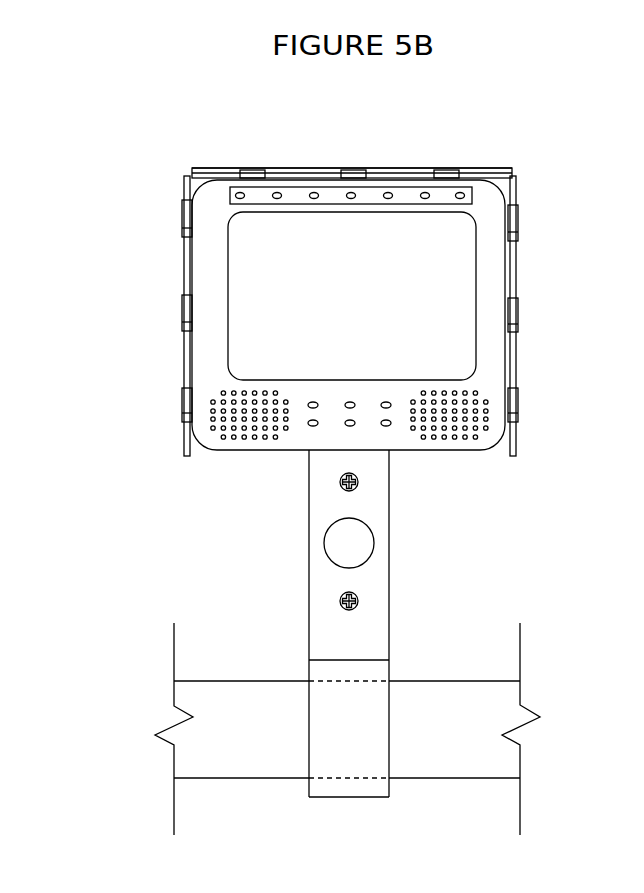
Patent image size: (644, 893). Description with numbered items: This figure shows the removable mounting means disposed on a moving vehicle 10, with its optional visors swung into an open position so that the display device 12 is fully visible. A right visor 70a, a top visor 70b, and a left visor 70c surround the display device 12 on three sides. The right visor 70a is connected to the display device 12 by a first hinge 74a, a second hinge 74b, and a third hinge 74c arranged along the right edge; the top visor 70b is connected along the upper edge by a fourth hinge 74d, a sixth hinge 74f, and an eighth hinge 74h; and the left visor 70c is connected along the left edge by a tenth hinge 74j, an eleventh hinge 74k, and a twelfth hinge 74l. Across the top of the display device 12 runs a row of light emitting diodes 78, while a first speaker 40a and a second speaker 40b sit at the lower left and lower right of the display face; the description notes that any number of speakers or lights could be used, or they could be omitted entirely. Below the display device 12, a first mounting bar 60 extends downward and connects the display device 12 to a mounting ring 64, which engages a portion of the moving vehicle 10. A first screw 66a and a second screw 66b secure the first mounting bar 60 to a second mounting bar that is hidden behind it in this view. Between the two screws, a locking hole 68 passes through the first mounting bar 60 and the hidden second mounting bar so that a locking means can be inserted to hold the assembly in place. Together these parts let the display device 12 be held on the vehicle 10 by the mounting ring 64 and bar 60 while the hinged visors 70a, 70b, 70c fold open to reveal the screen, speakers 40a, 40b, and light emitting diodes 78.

The moving vehicle 10 is at (475, 779).
The display device 12 is at (246, 232).
The first speaker 40a is at (252, 413).
The second speaker 40b is at (452, 413).
The first mounting bar 60 is at (320, 590).
The mounting ring 64 is at (345, 800).
The first screw 66a is at (358, 485).
The second screw 66b is at (358, 605).
The locking hole 68 is at (347, 542).
The right visor 70a is at (516, 270).
The top visor 70b is at (512, 170).
The left visor 70c is at (185, 268).
The first hinge 74a is at (516, 225).
The second hinge 74b is at (516, 316).
The third hinge 74c is at (516, 406).
The fourth hinge 74d is at (448, 170).
The sixth hinge 74f is at (355, 170).
The eighth hinge 74h is at (257, 170).
The tenth hinge 74j is at (184, 222).
The eleventh hinge 74k is at (184, 318).
The twelfth hinge 74l is at (184, 408).
The row of light emitting diodes 78 is at (233, 180).